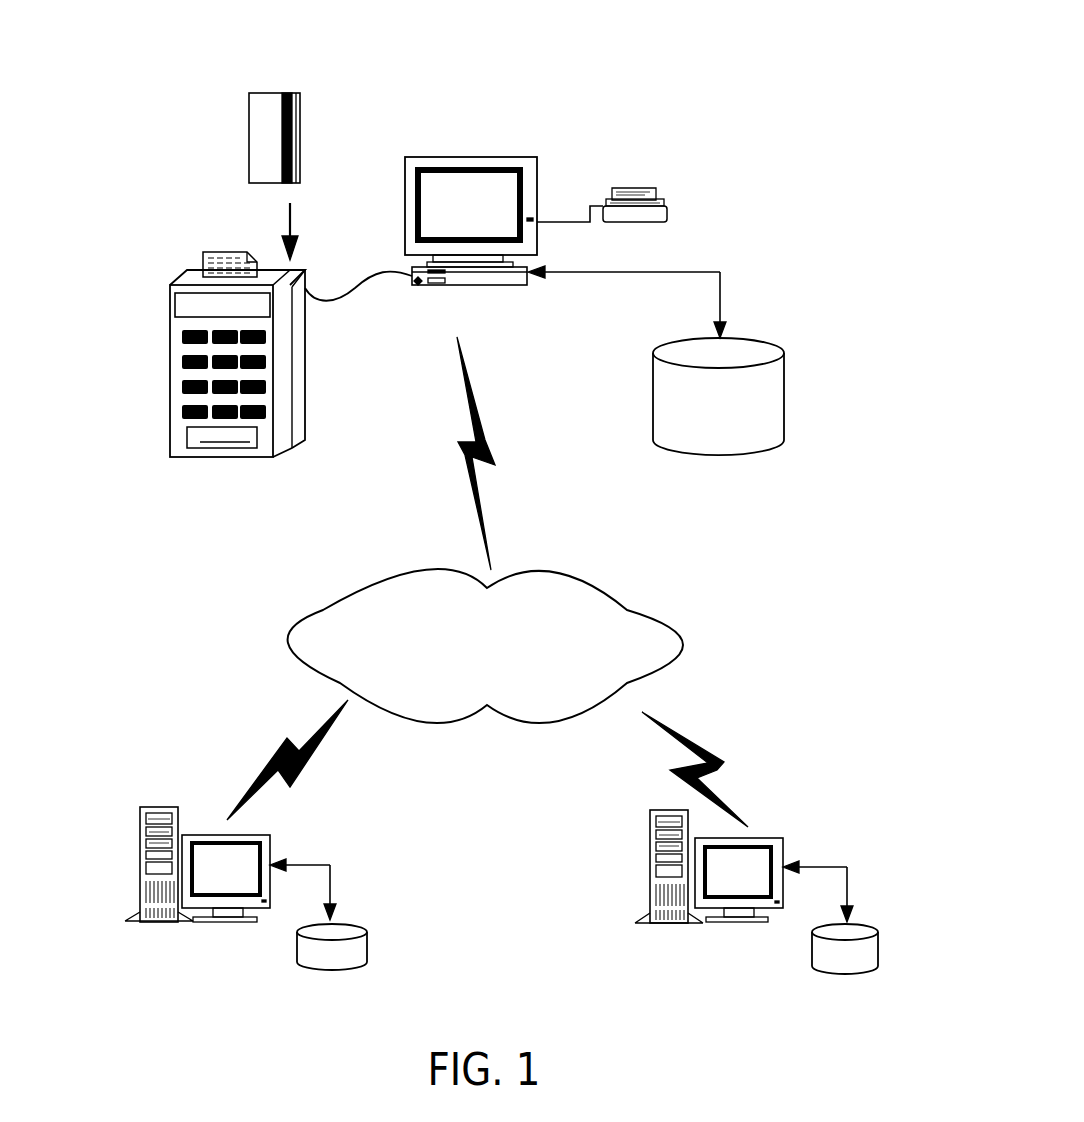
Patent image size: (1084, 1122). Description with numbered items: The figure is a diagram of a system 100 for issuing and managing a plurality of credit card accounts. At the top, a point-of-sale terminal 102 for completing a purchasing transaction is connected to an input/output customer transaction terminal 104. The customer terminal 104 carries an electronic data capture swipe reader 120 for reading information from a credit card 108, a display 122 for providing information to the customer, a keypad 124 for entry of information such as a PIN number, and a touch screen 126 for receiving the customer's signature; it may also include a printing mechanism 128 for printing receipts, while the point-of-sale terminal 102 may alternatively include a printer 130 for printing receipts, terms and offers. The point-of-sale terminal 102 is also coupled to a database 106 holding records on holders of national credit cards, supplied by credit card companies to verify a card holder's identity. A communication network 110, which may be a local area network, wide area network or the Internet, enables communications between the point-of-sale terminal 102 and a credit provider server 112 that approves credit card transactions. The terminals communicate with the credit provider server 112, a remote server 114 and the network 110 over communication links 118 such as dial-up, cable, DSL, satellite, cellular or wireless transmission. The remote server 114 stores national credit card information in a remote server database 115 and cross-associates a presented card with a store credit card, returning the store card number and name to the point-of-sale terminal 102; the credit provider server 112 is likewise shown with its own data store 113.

The system 100 is at (635, 81).
The point-of-sale terminal 102 is at (471, 156).
The input/output customer transaction terminal 104 is at (185, 457).
The database 106 is at (653, 400).
The credit card 108 is at (263, 93).
The communication network 110 is at (683, 647).
The credit provider server 112 is at (138, 864).
The credit provider data store 113 is at (368, 953).
The remote server 114 is at (648, 867).
The remote server database 115 is at (882, 955).
The communication link 118 is at (460, 450).
The electronic data capture swipe reader 120 is at (266, 463).
The display 122 is at (176, 297).
The keypad 124 is at (180, 357).
The touch screen 126 is at (186, 438).
The printing mechanism 128 is at (220, 258).
The printer 130 is at (670, 206).